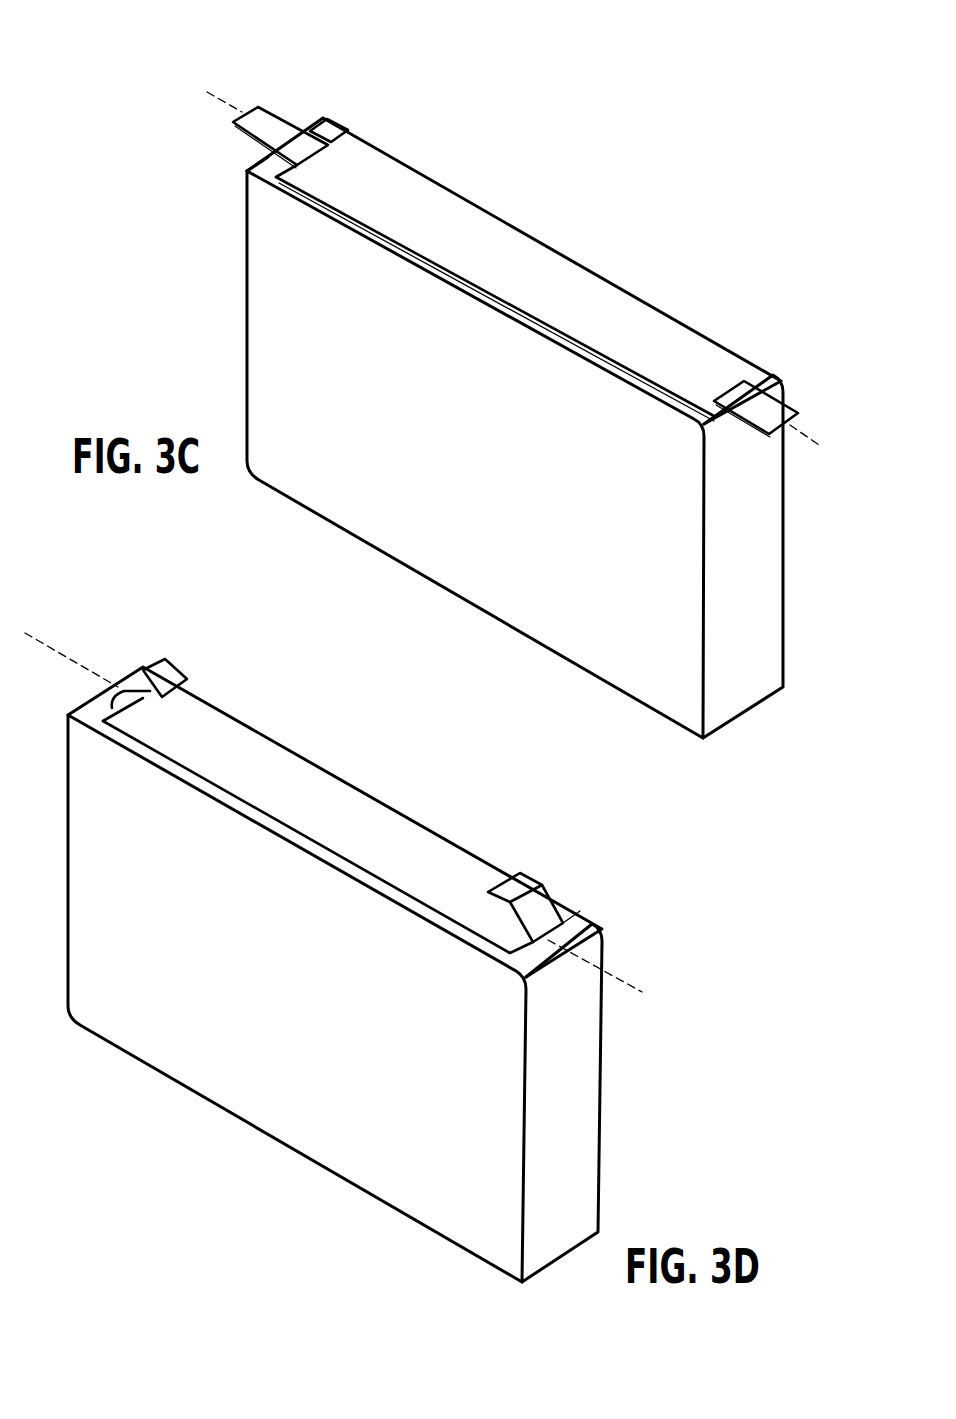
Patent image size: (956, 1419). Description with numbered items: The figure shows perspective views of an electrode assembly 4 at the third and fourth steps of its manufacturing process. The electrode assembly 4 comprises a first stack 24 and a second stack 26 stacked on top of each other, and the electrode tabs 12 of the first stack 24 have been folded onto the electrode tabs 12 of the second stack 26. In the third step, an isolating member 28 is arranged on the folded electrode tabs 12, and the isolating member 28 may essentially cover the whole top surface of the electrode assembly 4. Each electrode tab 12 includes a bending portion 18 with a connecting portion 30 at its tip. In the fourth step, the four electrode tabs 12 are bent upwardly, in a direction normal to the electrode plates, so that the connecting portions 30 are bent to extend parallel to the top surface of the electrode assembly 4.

In FIG. 3C, the electrode assembly 4 is at (778, 252).
In FIG. 3D, the electrode assembly 4 is at (183, 1122).
In FIG. 3C, the electrode tab 12 is at (278, 136).
In FIG. 3D, the electrode tab 12 is at (172, 681).
In FIG. 3C, the bending portion 18 is at (488, 254).
In FIG. 3D, the bending portion 18 is at (331, 775).
In FIG. 3C, the first stack 24 is at (327, 134).
In FIG. 3C, the second stack 26 is at (283, 306).
In FIG. 3C, the isolating member 28 is at (538, 257).
In FIG. 3D, the isolating member 28 is at (355, 805).
In FIG. 3D, the connecting portion 30 is at (157, 682).